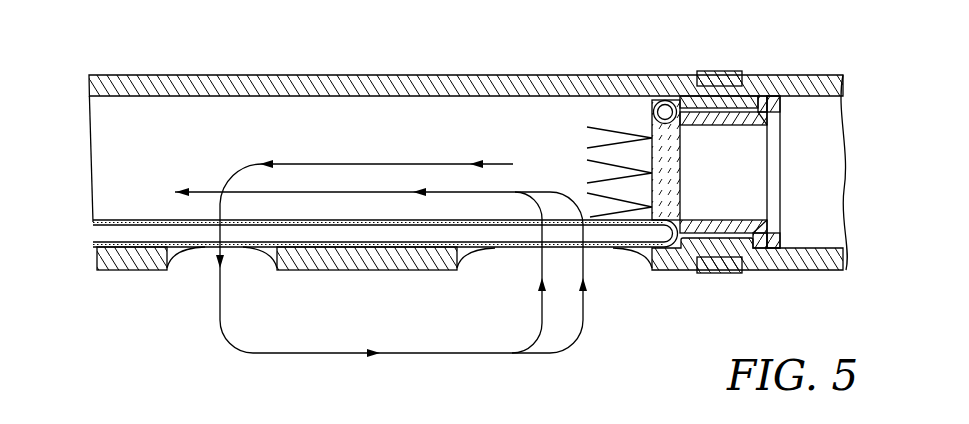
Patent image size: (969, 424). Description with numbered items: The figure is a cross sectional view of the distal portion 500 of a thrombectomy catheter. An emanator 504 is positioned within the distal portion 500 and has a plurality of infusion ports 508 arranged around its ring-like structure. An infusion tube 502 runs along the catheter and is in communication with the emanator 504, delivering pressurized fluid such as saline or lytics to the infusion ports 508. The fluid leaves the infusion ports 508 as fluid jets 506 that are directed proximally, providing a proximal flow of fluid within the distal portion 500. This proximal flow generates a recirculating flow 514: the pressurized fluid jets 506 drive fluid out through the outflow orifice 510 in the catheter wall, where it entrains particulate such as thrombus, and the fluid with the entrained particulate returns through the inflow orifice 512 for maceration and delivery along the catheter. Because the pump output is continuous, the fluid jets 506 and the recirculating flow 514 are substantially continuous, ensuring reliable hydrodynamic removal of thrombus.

The distal portion 500 is at (420, 75).
The infusion tube 502 is at (94, 232).
The emanator 504 is at (655, 100).
The fluid jets 506 is at (597, 127).
The infusion ports 508 is at (655, 138).
The outflow orifice 510 is at (206, 257).
The inflow orifice 512 is at (612, 258).
The recirculating flow 514 is at (318, 356).